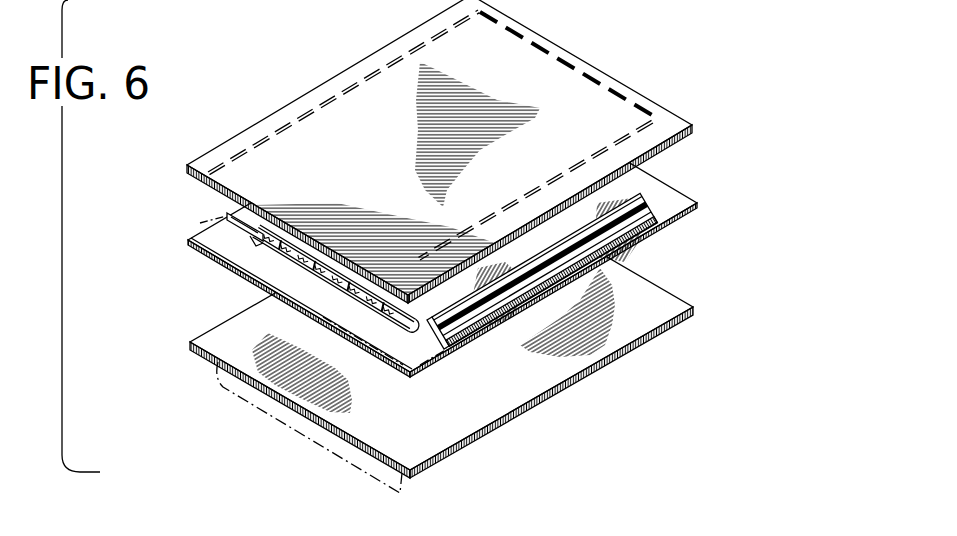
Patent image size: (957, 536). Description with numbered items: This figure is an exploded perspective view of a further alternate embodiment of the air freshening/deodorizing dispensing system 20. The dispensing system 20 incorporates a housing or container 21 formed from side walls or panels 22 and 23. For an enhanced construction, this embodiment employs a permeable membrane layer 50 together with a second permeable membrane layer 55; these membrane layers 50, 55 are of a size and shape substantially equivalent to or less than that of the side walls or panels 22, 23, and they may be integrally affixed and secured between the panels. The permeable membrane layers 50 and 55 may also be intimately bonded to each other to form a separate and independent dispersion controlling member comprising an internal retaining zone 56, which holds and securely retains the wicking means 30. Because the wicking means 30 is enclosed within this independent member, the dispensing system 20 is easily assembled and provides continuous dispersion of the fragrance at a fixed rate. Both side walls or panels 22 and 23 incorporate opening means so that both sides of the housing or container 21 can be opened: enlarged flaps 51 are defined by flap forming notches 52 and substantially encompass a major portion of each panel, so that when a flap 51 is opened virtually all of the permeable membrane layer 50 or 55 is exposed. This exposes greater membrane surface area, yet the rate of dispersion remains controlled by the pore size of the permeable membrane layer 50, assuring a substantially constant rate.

The air freshening/deodorizing dispensing system 20 is at (605, 63).
The housing or container 21 is at (353, 83).
The side wall or panel 22 is at (670, 122).
The side wall or panel 23 is at (665, 303).
The wicking means 30 is at (292, 242).
The permeable membrane layer 50 is at (457, 333).
The flap 51 is at (500, 83).
The flap forming notches 52 is at (407, 52).
The second permeable membrane layer 55 is at (430, 340).
The internal retaining zone 56 is at (262, 240).